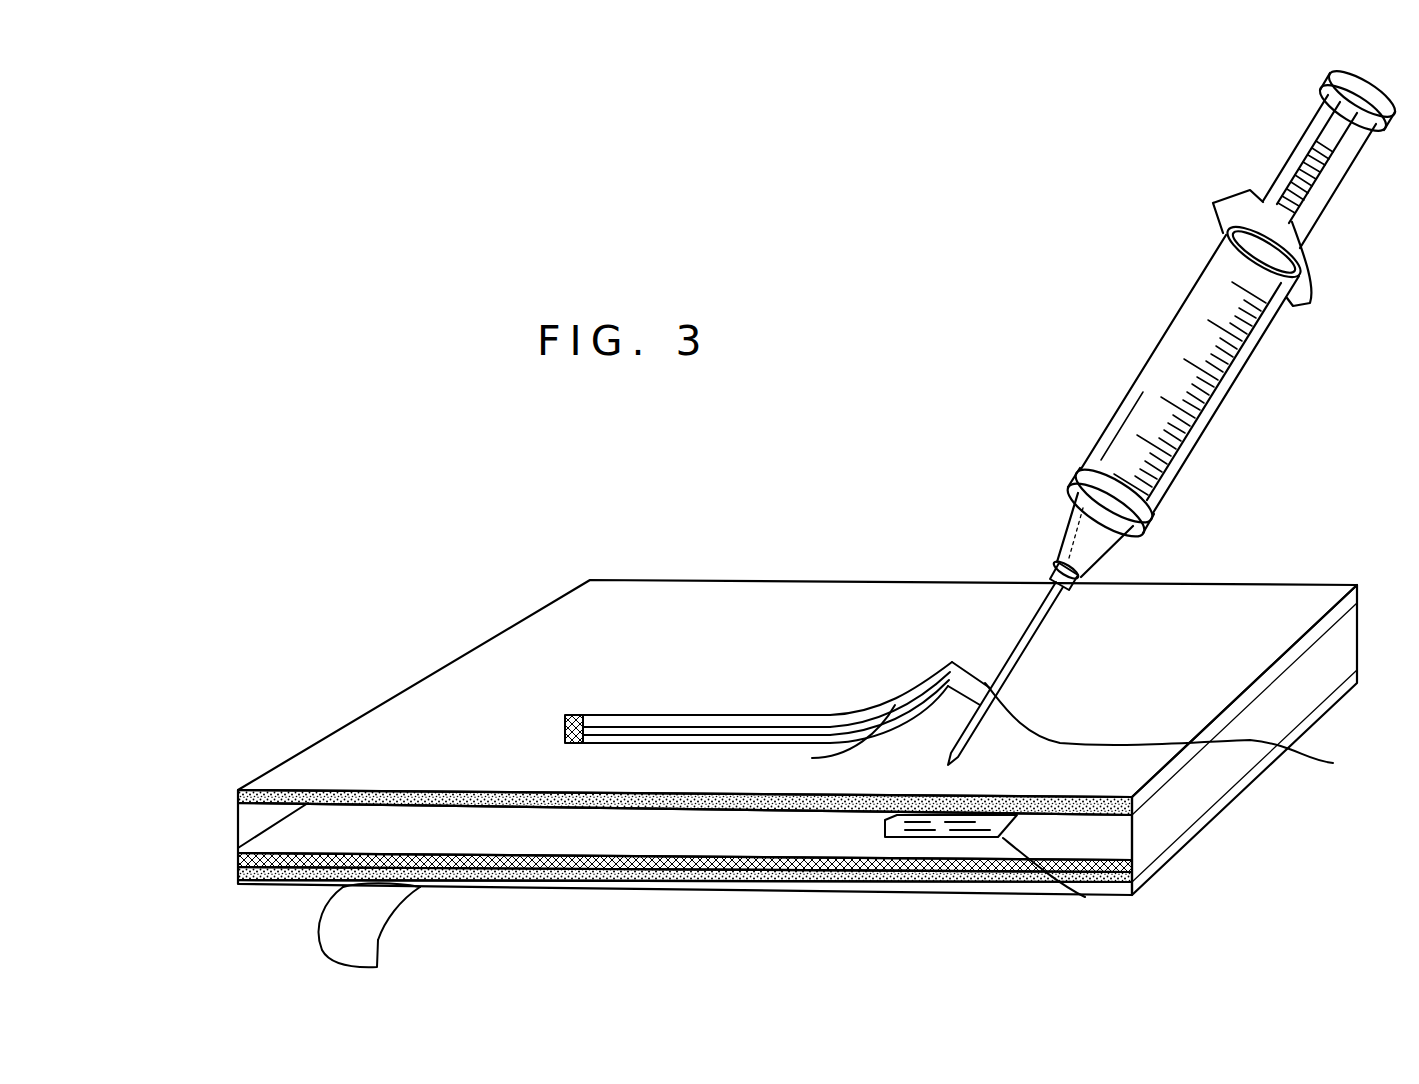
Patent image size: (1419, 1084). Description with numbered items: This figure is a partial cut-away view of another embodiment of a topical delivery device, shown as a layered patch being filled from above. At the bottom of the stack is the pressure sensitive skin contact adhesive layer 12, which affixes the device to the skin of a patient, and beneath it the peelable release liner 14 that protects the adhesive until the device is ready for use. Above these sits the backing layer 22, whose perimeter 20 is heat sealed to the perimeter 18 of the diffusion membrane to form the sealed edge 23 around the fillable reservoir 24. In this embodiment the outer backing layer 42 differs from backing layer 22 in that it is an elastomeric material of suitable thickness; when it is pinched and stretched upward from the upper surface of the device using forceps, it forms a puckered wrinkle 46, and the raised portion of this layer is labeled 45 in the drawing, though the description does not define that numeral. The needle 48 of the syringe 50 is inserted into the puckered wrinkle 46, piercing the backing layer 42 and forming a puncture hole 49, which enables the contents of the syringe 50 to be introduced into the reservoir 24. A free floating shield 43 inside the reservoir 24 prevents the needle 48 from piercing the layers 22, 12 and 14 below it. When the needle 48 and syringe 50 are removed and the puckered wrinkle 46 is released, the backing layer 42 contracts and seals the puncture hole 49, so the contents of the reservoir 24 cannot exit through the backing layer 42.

The pressure sensitive skin contact adhesive layer 12 is at (282, 882).
The release liner 14 is at (380, 944).
The perimeter of diffusion membrane 18 is at (230, 858).
The perimeter of backing layer 20 is at (237, 790).
The backing layer 22 is at (697, 893).
The sealed edge 23 is at (237, 835).
The fillable reservoir 24 is at (602, 835).
The backing layer 42 is at (737, 620).
The free floating shield 43 is at (1085, 897).
The strip 45 is at (817, 720).
The puckered wrinkle 46 is at (932, 733).
The needle 48 is at (1013, 648).
The puncture hole 49 is at (1163, 724).
The syringe 50 is at (1200, 418).